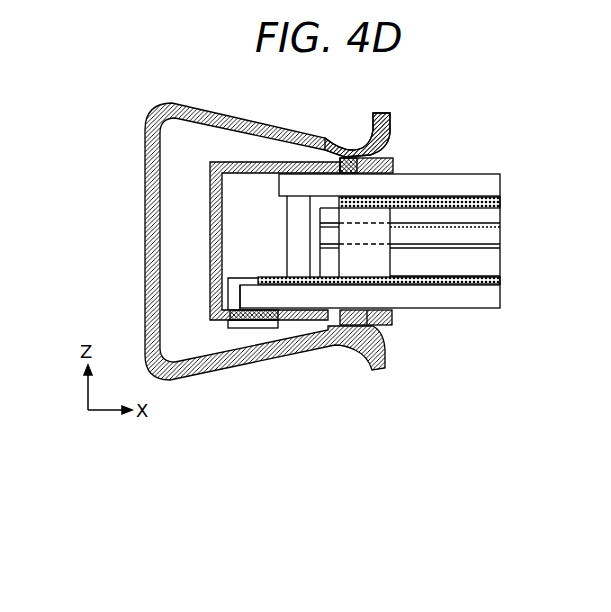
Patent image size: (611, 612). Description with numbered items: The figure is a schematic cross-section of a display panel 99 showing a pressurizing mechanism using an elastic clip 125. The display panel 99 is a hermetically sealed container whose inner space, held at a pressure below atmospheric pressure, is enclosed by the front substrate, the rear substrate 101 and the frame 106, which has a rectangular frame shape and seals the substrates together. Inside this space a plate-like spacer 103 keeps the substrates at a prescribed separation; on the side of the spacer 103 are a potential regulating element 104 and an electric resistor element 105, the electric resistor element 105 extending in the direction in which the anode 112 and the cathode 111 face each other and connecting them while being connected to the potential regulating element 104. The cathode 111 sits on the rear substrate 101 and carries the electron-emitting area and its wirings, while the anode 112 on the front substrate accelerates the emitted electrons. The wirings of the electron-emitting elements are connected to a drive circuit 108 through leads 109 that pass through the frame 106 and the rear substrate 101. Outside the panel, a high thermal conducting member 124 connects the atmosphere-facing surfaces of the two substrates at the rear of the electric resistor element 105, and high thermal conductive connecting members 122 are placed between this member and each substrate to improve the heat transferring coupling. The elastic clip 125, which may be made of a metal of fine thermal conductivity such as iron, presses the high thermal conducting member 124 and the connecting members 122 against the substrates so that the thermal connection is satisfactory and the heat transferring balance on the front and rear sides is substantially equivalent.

The display panel 99 is at (496, 137).
The rear substrate 101 is at (493, 183).
The spacer 103 is at (493, 263).
The potential regulating element 104 is at (462, 243).
The electric resistor element 105 is at (370, 237).
The frame 106 is at (293, 233).
The drive circuit 108 is at (265, 330).
The leads 109 is at (237, 327).
The cathode 111 is at (295, 275).
The anode 112 is at (325, 137).
The high thermal conductive connecting member 122 is at (385, 157).
The high thermal conducting member 124 is at (218, 162).
The elastic clip 125 is at (258, 123).